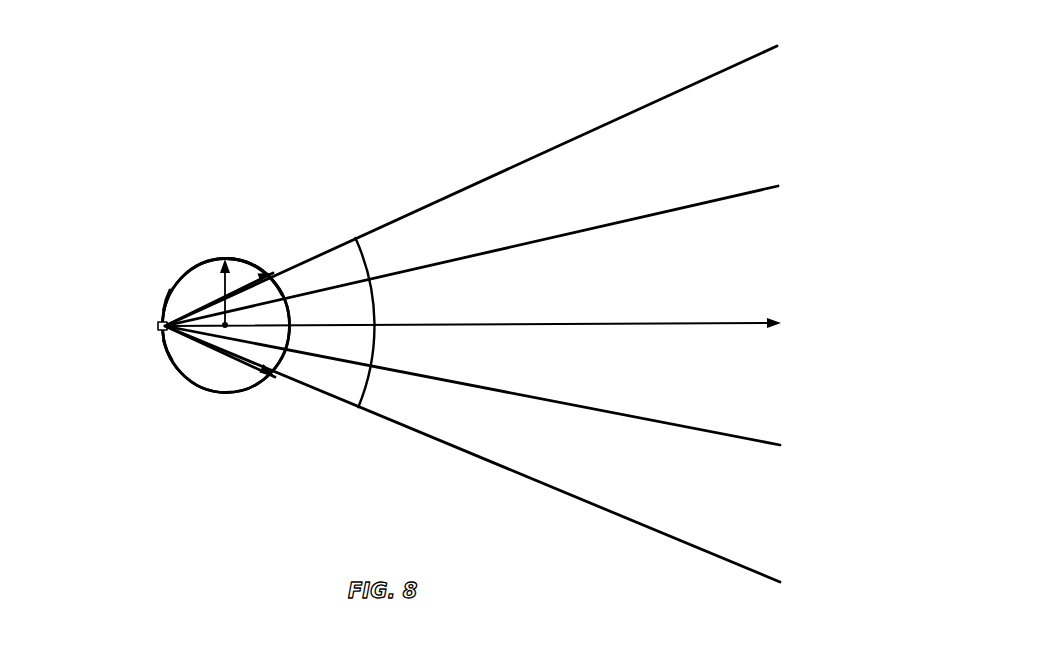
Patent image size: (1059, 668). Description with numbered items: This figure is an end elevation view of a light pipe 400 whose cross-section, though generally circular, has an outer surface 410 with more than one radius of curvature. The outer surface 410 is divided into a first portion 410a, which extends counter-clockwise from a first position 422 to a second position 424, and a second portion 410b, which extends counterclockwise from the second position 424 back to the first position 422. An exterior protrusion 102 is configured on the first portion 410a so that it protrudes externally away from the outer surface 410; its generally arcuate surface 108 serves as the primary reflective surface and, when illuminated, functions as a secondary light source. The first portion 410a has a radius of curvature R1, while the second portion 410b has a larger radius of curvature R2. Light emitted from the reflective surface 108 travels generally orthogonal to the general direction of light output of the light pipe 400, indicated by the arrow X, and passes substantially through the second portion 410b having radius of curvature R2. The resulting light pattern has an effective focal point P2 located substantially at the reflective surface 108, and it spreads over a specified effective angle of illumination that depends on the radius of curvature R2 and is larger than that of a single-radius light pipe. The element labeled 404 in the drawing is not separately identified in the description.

The light pipe 400 is at (436, 233).
The exterior protrusion 102 is at (157, 326).
The reflective surface 108 is at (170, 312).
The light emission profile circle 404 is at (208, 262).
The outer surface 410 is at (253, 260).
The first portion of the outer surface 410a is at (175, 285).
The second portion of the outer surface 410b is at (296, 342).
The first position 422 is at (280, 266).
The second position 424 is at (280, 380).
The radius of curvature of the first portion R1 is at (194, 268).
The radius of curvature of the second portion R2 is at (243, 263).
The effective focal point P2 is at (177, 338).